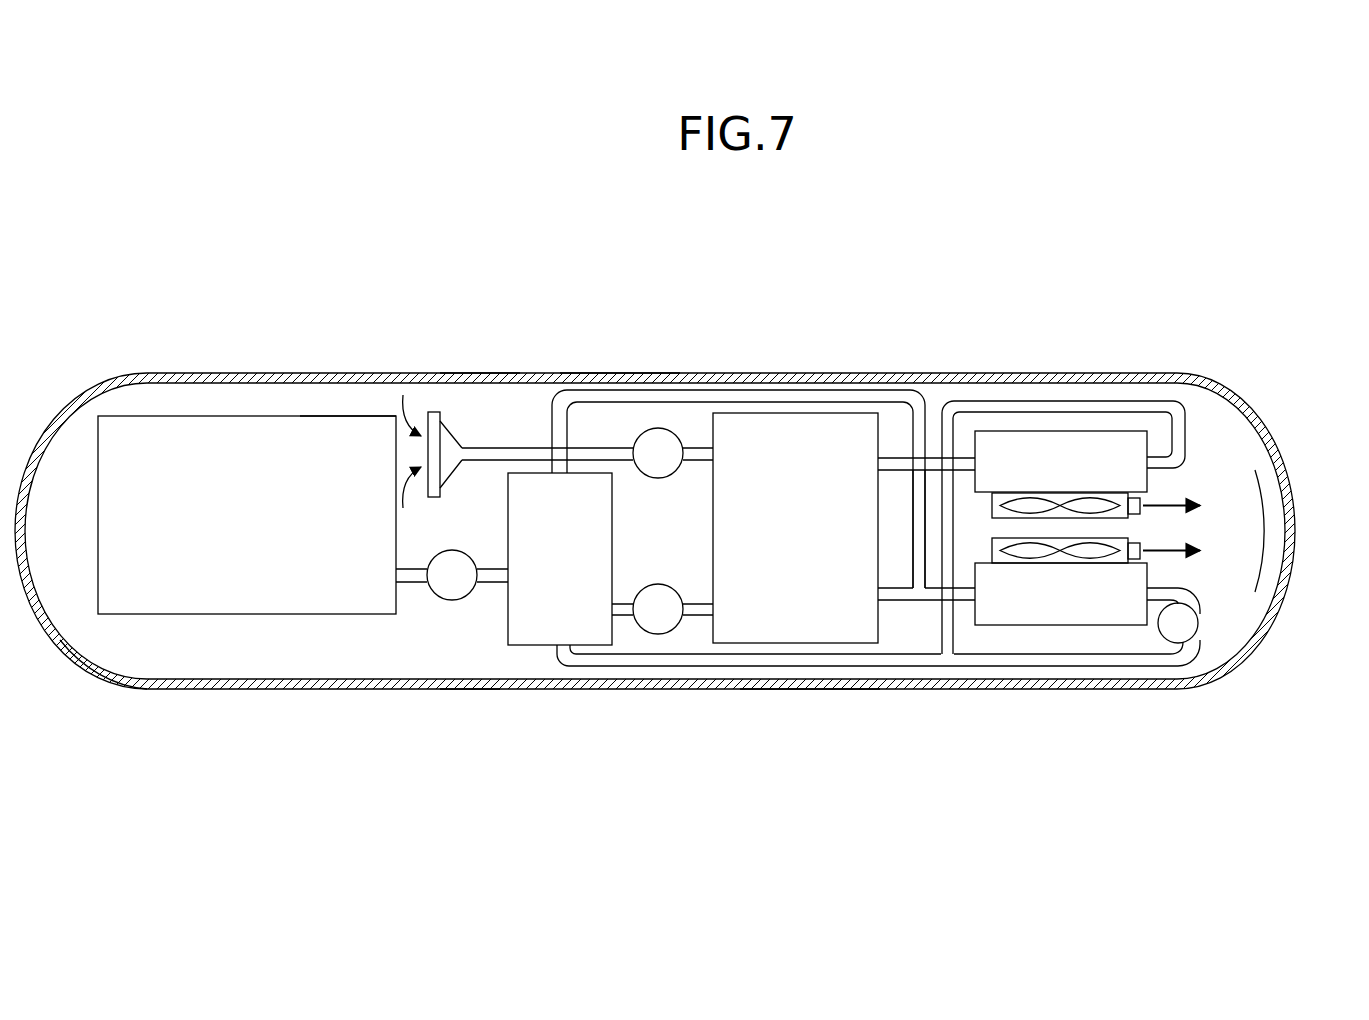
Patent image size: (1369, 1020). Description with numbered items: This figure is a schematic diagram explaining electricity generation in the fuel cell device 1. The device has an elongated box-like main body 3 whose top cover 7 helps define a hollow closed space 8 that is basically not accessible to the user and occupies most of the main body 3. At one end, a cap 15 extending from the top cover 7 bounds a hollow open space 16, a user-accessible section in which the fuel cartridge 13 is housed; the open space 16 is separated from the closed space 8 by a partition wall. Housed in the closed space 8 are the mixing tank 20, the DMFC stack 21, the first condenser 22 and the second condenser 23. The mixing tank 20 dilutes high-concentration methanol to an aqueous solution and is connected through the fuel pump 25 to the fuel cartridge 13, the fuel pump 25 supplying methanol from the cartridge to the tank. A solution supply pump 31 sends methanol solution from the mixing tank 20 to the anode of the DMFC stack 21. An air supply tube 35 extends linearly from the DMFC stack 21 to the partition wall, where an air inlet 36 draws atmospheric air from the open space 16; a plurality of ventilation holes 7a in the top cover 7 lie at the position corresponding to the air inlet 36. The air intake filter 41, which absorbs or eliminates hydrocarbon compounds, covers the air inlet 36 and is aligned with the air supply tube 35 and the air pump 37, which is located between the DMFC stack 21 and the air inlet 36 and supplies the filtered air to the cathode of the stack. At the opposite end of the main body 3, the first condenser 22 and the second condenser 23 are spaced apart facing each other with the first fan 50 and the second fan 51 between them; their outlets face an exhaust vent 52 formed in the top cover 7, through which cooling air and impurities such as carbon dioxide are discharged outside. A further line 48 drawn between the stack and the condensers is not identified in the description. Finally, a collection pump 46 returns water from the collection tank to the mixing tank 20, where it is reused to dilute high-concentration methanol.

The fuel cell device 1 is at (857, 304).
The main body 3 is at (616, 373).
The top cover 7 is at (809, 689).
The ventilation holes 7a is at (515, 373).
The closed space 8 is at (898, 632).
The fuel cartridge 13 is at (248, 437).
The cap 15 is at (95, 690).
The open space 16 is at (351, 400).
The mixing tank 20 is at (592, 534).
The DMFC stack 21 is at (787, 432).
The first condenser 22 is at (1108, 450).
The second condenser 23 is at (1086, 612).
The fuel pump 25 is at (455, 601).
The solution supply pump 31 is at (657, 646).
The air supply tube 35 is at (541, 447).
The air inlet 36 is at (449, 440).
The air pump 37 is at (665, 428).
The air intake filter 41 is at (432, 459).
The collection pump 46 is at (1200, 626).
The pipe 48 is at (916, 523).
The first fan 50 is at (1027, 497).
The second fan 51 is at (1020, 560).
The exhaust vent 52 is at (1296, 524).